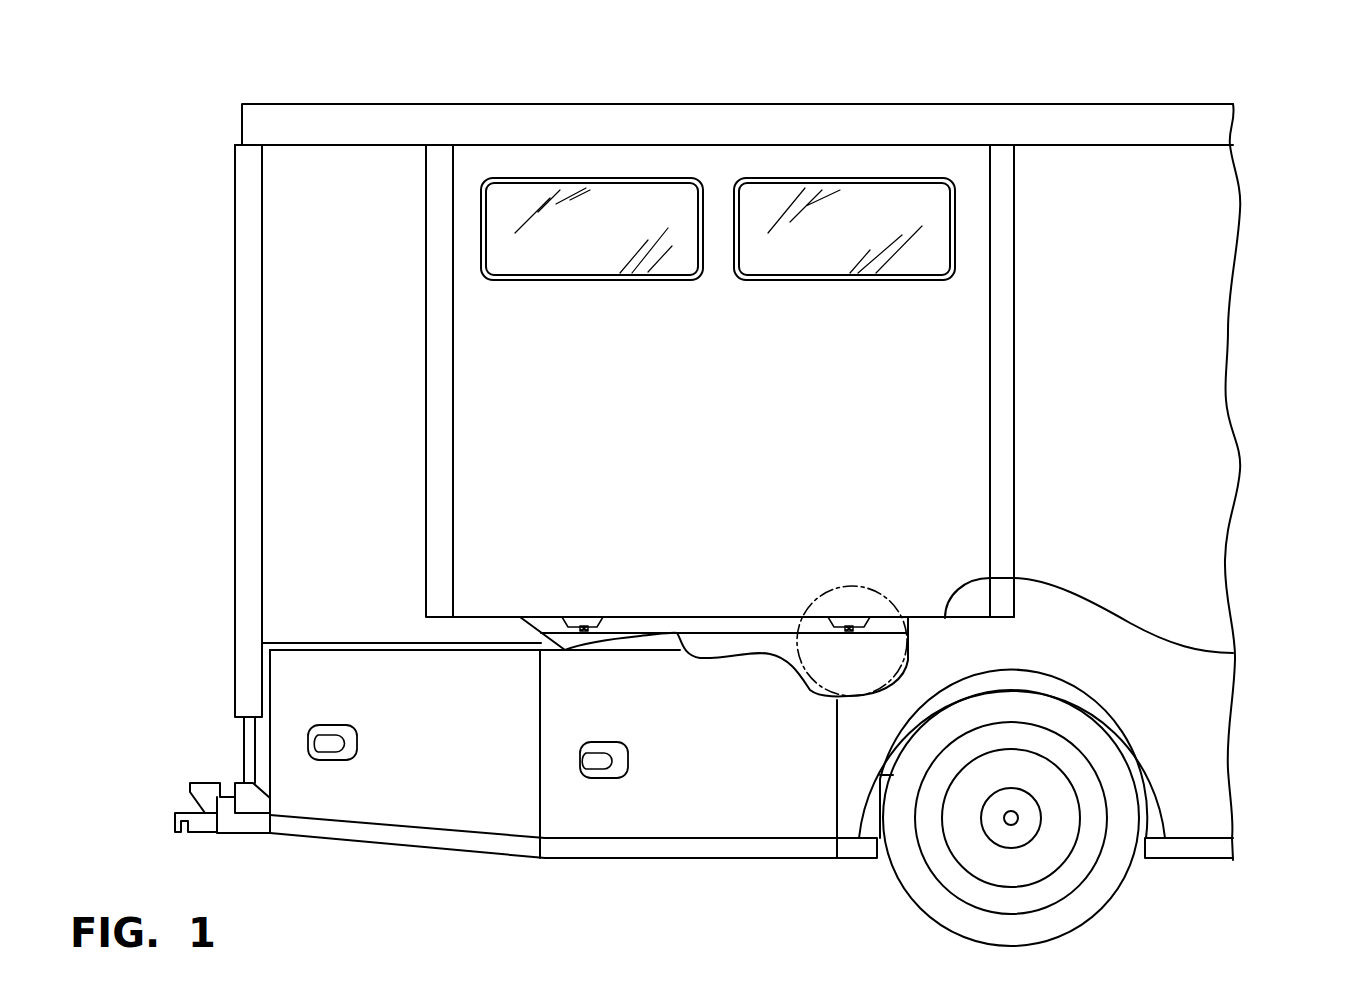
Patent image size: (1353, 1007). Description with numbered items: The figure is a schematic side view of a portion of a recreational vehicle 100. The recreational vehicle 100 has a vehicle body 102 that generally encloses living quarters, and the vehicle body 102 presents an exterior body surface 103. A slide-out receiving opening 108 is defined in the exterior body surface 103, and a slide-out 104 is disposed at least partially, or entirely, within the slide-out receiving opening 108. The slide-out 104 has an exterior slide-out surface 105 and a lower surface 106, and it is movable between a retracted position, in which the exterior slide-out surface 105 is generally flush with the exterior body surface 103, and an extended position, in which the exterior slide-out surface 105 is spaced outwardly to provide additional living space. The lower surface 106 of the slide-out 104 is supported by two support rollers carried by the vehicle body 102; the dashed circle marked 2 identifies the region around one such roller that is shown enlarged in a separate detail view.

The recreational vehicle 100 is at (398, 91).
The slide-out receiving opening 108 is at (1016, 212).
The vehicle body 102 is at (1240, 204).
The exterior body surface 103 is at (1181, 318).
The slide-out 104 is at (990, 407).
The exterior slide-out surface 105 is at (967, 487).
The lower surface 106 is at (1233, 653).
The detail circle 2 is at (858, 687).